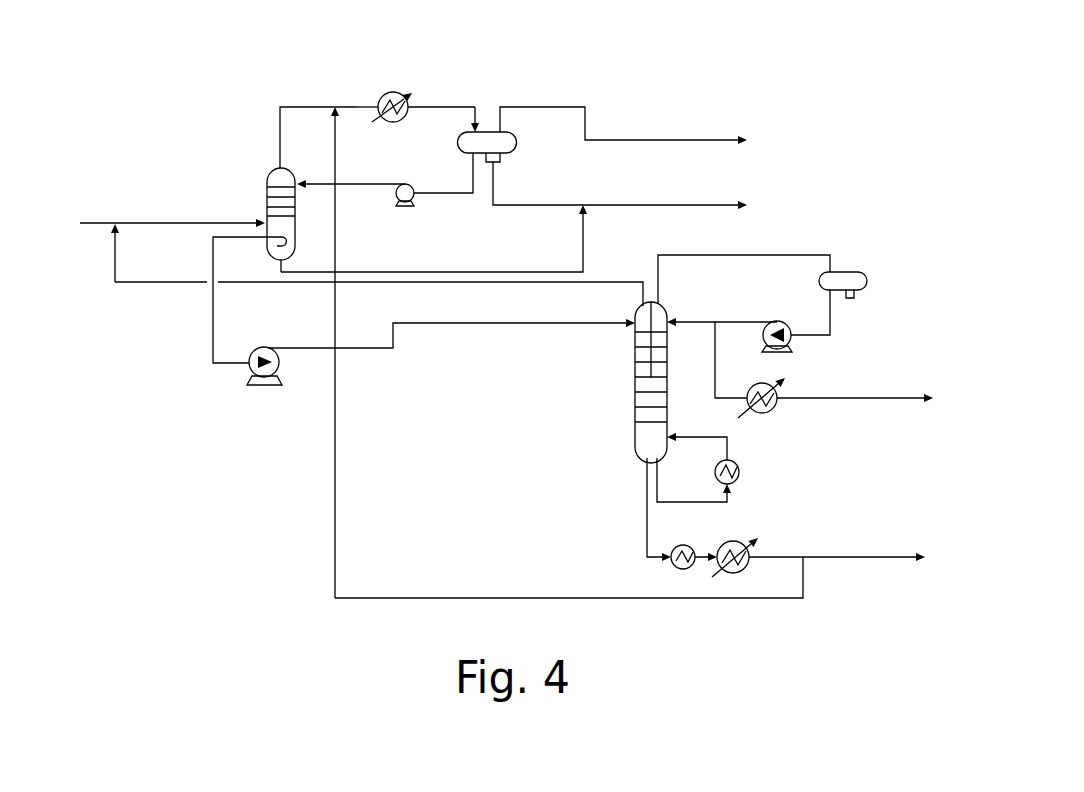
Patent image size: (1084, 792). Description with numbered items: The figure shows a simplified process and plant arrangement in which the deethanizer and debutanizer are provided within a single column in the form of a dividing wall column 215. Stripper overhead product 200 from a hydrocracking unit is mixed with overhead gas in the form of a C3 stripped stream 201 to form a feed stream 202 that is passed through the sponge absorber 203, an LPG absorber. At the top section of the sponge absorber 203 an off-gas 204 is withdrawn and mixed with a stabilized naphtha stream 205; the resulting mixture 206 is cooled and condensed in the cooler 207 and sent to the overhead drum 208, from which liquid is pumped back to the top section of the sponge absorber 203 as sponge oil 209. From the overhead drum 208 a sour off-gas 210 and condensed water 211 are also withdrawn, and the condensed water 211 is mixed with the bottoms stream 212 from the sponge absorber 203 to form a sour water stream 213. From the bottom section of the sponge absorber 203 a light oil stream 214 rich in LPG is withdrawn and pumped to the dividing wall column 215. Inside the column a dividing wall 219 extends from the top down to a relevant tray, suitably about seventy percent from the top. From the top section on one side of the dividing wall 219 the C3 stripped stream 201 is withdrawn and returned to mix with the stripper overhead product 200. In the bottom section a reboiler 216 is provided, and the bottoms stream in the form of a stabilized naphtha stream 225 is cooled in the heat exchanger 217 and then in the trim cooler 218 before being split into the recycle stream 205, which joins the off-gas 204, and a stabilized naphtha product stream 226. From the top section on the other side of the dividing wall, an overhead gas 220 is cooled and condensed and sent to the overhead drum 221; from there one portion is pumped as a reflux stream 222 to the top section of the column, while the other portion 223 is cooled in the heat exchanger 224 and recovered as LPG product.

The stripper overhead product 200 is at (87, 211).
The C3 stripped stream 201 is at (377, 265).
The feed stream 202 is at (190, 212).
The sponge absorber 203 is at (266, 191).
The off-gas 204 is at (318, 123).
The stabilized naphtha stream 205 is at (567, 352).
The mixture 206 is at (357, 107).
The cooler 207 is at (393, 92).
The overhead drum 208 is at (517, 142).
The sponge oil 209 is at (385, 179).
The sour off-gas 210 is at (623, 125).
The condensed water 211 is at (538, 183).
The bottoms stream 212 is at (434, 238).
The sour water stream 213 is at (665, 193).
The light oil stream 214 is at (399, 311).
The dividing wall column 215 is at (635, 402).
The reboiler 216 is at (738, 462).
The heat exchanger 217 is at (695, 546).
The trim cooler 218 is at (750, 548).
The dividing wall 219 is at (635, 337).
The overhead gas 220 is at (744, 267).
The overhead drum 221 is at (850, 272).
The reflux stream 222 is at (748, 321).
The other portion 223 is at (739, 360).
The heat exchanger 224 is at (777, 408).
The stabilized naphtha stream 225 is at (647, 517).
The stabilized naphtha product stream 226 is at (875, 557).